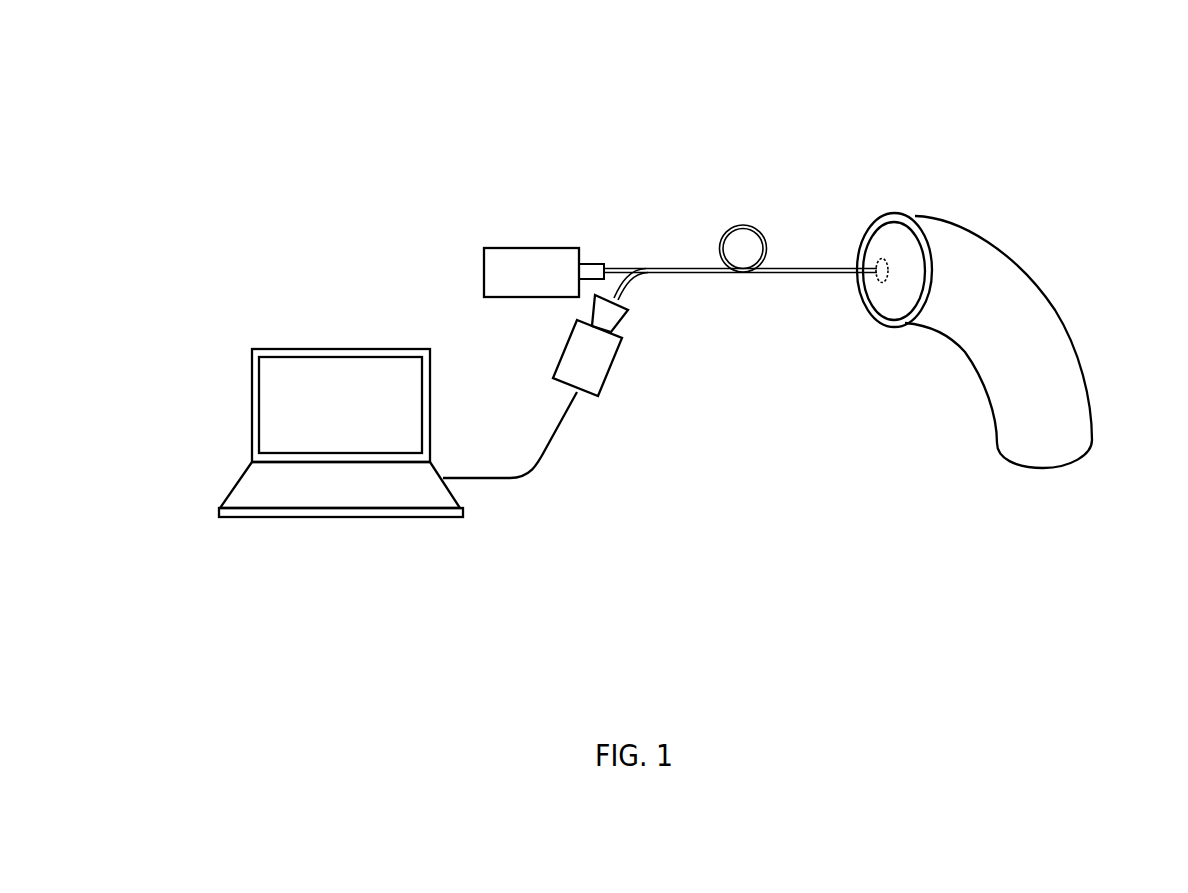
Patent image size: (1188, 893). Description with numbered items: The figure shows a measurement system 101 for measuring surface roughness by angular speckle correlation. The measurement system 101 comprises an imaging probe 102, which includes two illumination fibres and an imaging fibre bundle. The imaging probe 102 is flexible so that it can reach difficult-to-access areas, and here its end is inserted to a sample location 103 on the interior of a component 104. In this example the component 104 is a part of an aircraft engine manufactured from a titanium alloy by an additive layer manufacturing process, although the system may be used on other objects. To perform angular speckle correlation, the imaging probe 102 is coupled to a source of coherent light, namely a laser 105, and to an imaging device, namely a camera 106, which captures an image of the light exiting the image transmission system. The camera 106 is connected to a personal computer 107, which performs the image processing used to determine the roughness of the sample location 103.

The measurement system 101 is at (316, 114).
The imaging probe 102 is at (777, 268).
The sample location 103 is at (896, 253).
The component 104 is at (1047, 310).
The laser 105 is at (490, 247).
The camera 106 is at (565, 362).
The personal computer 107 is at (257, 350).